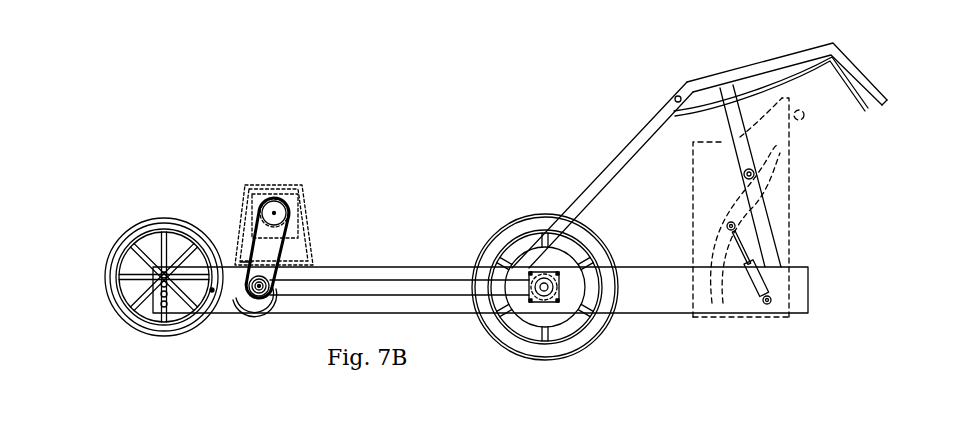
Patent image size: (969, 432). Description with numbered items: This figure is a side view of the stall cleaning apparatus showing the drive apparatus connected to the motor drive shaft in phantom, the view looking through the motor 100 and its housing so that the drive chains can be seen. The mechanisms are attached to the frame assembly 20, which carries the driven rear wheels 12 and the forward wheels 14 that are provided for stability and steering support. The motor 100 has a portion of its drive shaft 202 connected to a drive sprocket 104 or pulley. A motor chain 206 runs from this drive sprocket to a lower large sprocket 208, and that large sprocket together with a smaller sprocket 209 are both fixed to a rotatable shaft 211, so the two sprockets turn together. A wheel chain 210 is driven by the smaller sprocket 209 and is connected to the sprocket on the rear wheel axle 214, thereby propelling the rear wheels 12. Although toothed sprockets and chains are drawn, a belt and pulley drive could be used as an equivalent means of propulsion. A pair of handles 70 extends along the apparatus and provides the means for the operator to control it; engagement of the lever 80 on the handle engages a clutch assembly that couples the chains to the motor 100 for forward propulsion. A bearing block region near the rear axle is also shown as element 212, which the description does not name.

The rear wheels 12 is at (522, 213).
The forward wheels 14 is at (133, 222).
The frame assembly 20 is at (663, 267).
The handles 70 is at (840, 48).
The lever 80 is at (857, 96).
The motor 100 is at (248, 187).
The drive sprocket 104 is at (273, 212).
The drive shaft 202 is at (283, 205).
The motor chain 206 is at (285, 240).
The lower large sprocket 208 is at (252, 262).
The smaller sprocket 209 is at (253, 293).
The wheel chain 210 is at (333, 302).
The rotatable shaft 211 is at (263, 289).
The bearing block 212 is at (553, 302).
The rear wheel axle 214 is at (543, 291).